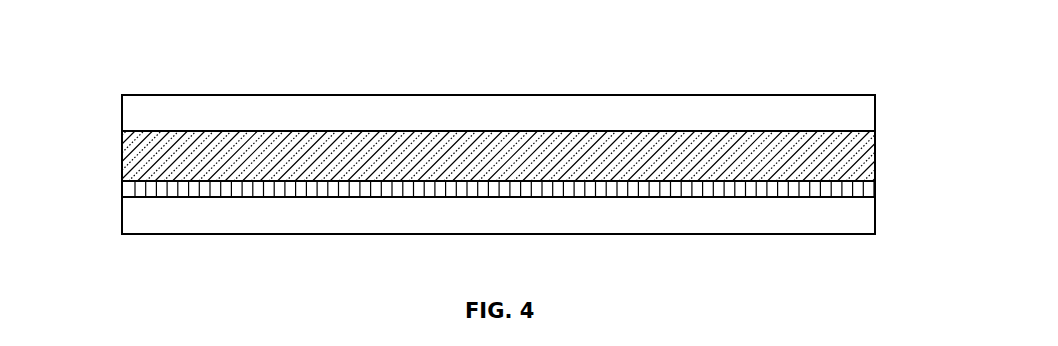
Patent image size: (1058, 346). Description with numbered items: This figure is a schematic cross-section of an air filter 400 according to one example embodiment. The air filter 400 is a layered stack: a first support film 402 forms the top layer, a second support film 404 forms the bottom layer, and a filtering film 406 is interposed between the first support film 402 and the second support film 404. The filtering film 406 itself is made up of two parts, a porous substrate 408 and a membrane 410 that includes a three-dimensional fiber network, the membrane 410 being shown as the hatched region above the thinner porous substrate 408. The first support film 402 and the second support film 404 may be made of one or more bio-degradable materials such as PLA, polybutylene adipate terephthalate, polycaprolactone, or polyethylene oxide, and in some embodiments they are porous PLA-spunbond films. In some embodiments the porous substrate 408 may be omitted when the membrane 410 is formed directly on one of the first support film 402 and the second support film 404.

The air filter 400 is at (485, 35).
The first support film 402 is at (860, 112).
The second support film 404 is at (868, 214).
The filtering film 406 is at (878, 160).
The porous substrate 408 is at (132, 190).
The membrane 410 is at (135, 152).